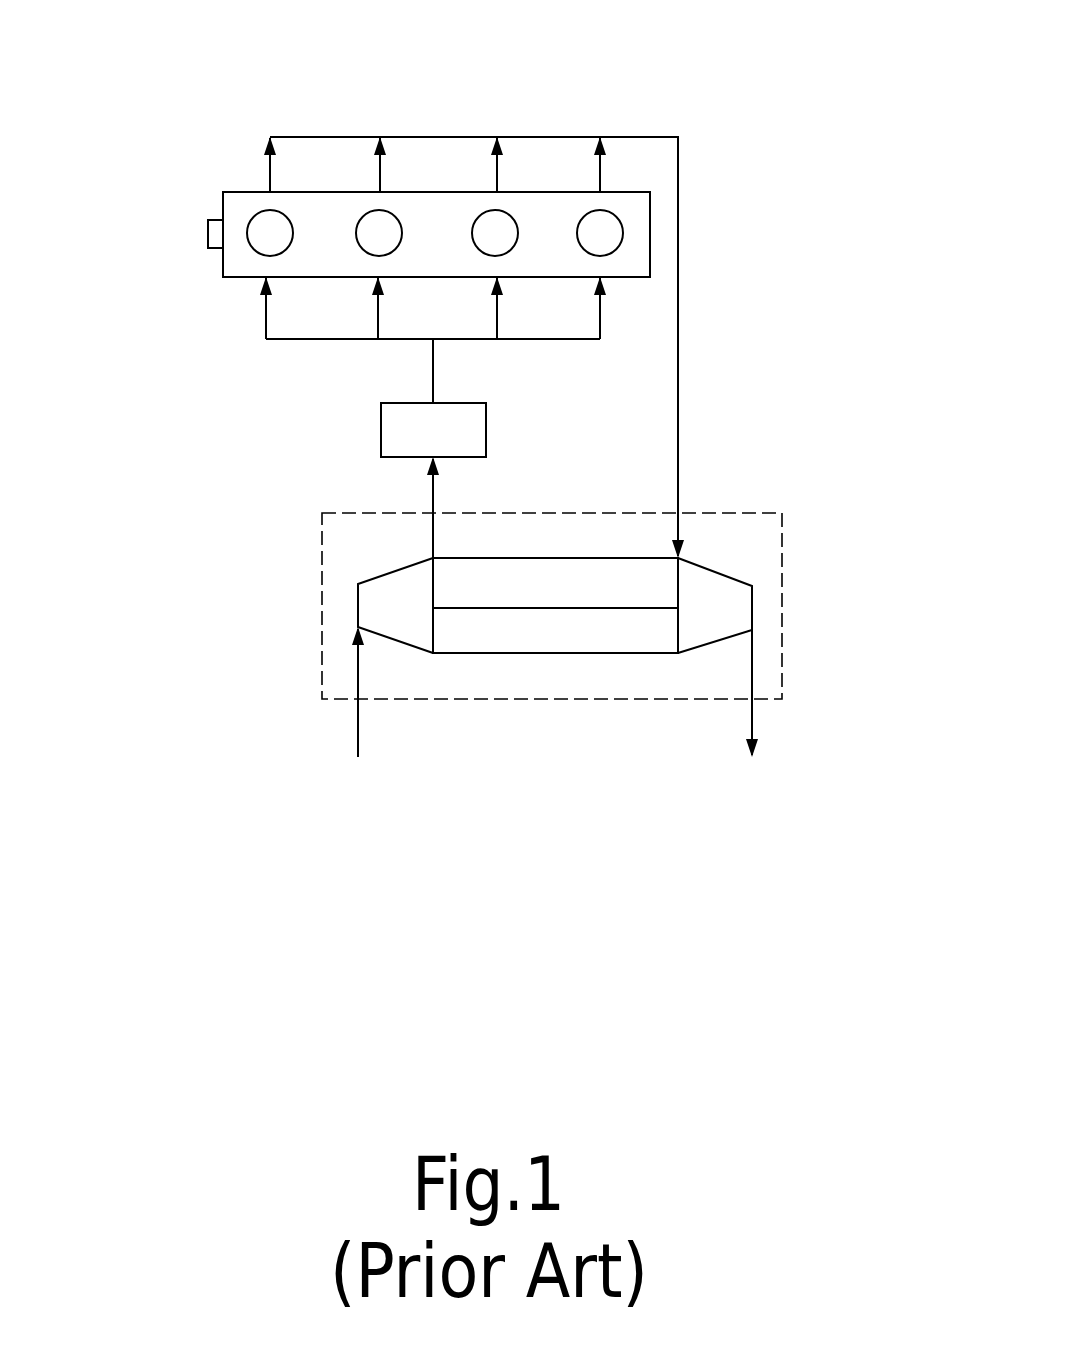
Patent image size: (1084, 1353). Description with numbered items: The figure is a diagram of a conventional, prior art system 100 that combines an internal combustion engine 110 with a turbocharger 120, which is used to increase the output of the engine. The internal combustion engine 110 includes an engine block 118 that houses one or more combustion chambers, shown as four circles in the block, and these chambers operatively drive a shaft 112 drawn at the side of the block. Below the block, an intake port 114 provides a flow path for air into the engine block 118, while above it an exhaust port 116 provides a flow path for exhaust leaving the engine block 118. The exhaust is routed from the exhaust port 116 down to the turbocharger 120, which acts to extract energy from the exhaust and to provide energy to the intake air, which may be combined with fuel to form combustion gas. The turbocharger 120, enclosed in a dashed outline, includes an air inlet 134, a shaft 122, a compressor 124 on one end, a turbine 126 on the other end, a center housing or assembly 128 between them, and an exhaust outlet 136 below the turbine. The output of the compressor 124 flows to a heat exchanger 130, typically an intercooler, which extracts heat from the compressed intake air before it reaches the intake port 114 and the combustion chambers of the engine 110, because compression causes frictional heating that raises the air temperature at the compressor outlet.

The prior art system 100 is at (710, 74).
The internal combustion engine 110 is at (400, 197).
The shaft 112 is at (208, 222).
The intake port 114 is at (266, 340).
The exhaust port 116 is at (448, 137).
The engine block 118 is at (462, 246).
The turbocharger 120 is at (387, 550).
The shaft 122 is at (467, 609).
The compressor 124 is at (417, 615).
The turbine 126 is at (737, 619).
The center housing or assembly 128 is at (574, 647).
The heat exchanger 130 is at (455, 442).
The air inlet 134 is at (357, 705).
The exhaust outlet 136 is at (752, 728).